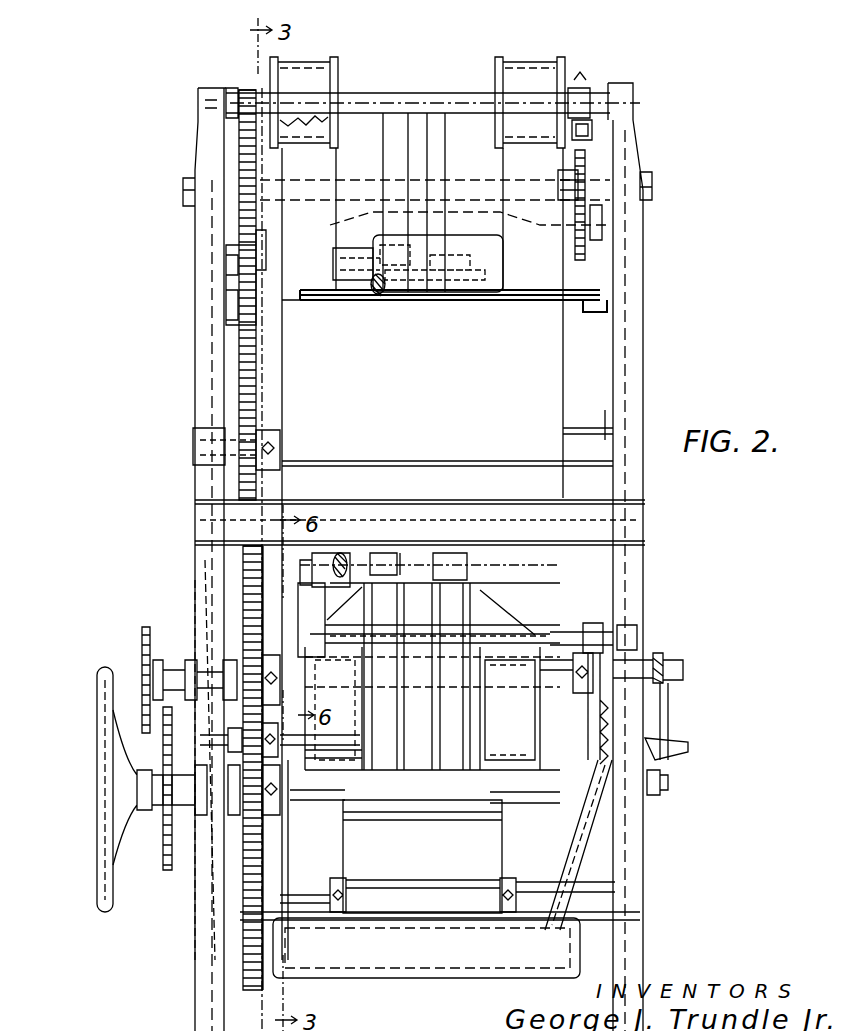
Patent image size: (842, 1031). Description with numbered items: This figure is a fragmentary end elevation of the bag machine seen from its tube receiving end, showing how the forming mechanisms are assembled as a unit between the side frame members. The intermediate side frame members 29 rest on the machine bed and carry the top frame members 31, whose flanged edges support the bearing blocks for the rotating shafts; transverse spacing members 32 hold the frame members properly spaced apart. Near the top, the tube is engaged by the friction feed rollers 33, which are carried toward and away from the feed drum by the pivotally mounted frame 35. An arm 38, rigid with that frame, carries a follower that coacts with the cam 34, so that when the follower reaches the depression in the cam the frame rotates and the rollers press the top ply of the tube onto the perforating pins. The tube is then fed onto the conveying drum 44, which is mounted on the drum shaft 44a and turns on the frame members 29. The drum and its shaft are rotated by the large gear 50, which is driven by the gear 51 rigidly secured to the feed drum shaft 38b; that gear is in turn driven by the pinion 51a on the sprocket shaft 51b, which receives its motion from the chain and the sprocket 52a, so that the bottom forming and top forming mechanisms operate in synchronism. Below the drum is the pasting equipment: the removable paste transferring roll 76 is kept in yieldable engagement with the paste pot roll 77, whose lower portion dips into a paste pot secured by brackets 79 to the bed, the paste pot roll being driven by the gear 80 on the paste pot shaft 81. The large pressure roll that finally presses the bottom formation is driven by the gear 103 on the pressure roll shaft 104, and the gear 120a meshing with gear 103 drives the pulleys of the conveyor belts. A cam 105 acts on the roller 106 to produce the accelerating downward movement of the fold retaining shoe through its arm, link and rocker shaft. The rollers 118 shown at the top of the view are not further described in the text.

The intermediate side frame member 29 is at (195, 578).
The top frame member 31 is at (200, 325).
The transverse spacing member 32 is at (600, 506).
The friction feed rollers 33 is at (332, 556).
The cam 34 is at (596, 760).
The pivotally mounted frame 35 is at (548, 600).
The arm 38 is at (600, 620).
The feed drum shaft 38b is at (552, 688).
The conveying drum 44 is at (447, 383).
The drum shaft 44a is at (195, 450).
The gear 50 is at (250, 377).
The gear 51 is at (255, 655).
The pinion 51a is at (252, 802).
The sprocket shaft 51b is at (322, 790).
The sprocket 52a is at (160, 862).
The paste transferring roll 76 is at (490, 810).
The paste pot roll 77 is at (490, 860).
The brackets 79 is at (645, 908).
The gear 80 is at (255, 850).
The paste pot shaft 81 is at (608, 886).
The gear 103 is at (239, 143).
The pressure roll shaft 104 is at (570, 175).
The cam 105 is at (575, 165).
The roller 106 is at (585, 130).
The rollers 118 is at (340, 68).
The gear 120a is at (455, 292).